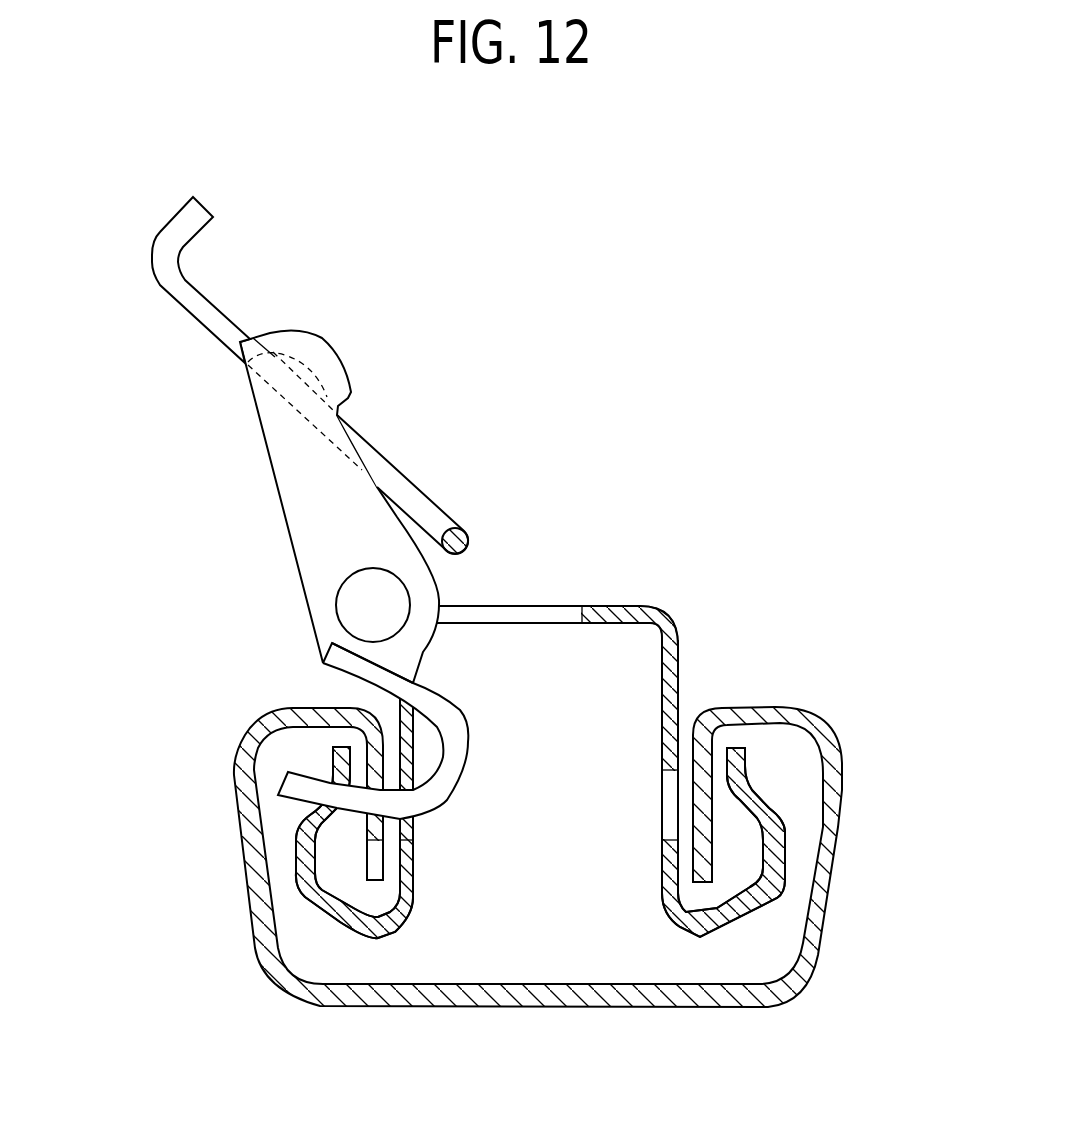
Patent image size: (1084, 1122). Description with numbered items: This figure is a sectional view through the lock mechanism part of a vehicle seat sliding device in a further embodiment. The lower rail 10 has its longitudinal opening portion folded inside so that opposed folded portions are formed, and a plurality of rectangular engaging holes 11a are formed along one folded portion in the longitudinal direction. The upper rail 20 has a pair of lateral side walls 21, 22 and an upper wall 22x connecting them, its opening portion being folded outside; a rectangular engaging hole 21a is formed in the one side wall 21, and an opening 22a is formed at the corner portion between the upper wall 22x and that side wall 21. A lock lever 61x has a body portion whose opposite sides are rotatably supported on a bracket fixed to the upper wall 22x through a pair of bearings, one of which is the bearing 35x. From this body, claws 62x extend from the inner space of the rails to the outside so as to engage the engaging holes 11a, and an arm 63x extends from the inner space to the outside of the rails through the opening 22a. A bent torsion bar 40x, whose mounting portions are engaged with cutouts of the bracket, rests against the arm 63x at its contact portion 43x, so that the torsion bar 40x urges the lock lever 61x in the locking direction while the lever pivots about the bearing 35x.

The lower rail 10 is at (526, 857).
The engaging holes 11a is at (373, 835).
The upper rail 20 is at (594, 767).
The side wall 21 is at (415, 855).
The engaging hole 21a is at (415, 840).
The side wall 22 is at (680, 685).
The opening 22a is at (575, 610).
The upper wall 22x is at (645, 607).
The bearing 35x is at (372, 607).
The torsion bar 40x is at (438, 488).
The contact portion 43x is at (287, 331).
The lock lever 61x is at (267, 508).
The claws 62x is at (291, 789).
The arm 63x is at (285, 450).